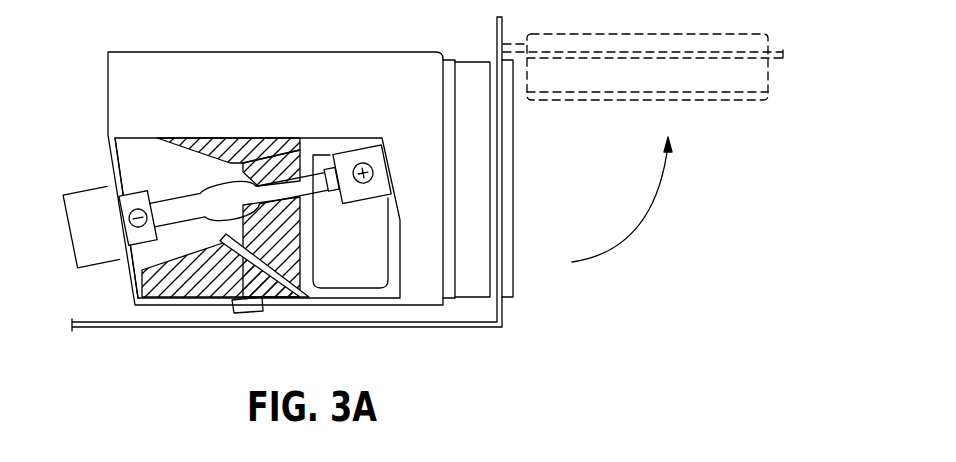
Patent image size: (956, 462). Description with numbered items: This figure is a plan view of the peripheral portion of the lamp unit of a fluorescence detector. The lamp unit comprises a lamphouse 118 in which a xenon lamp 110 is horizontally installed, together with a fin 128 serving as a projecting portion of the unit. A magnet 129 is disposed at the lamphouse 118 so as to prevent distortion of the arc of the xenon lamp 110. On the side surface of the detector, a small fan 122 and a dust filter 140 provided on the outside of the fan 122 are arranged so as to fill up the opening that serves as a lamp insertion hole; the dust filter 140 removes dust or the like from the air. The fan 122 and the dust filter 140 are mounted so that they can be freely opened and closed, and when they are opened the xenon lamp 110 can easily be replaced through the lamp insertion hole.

The xenon lamp 110 is at (183, 202).
The lamphouse 118 is at (134, 137).
The fan 122 is at (477, 149).
The fin 128 is at (270, 172).
The magnet 129 is at (258, 311).
The dust filter 140 is at (514, 178).